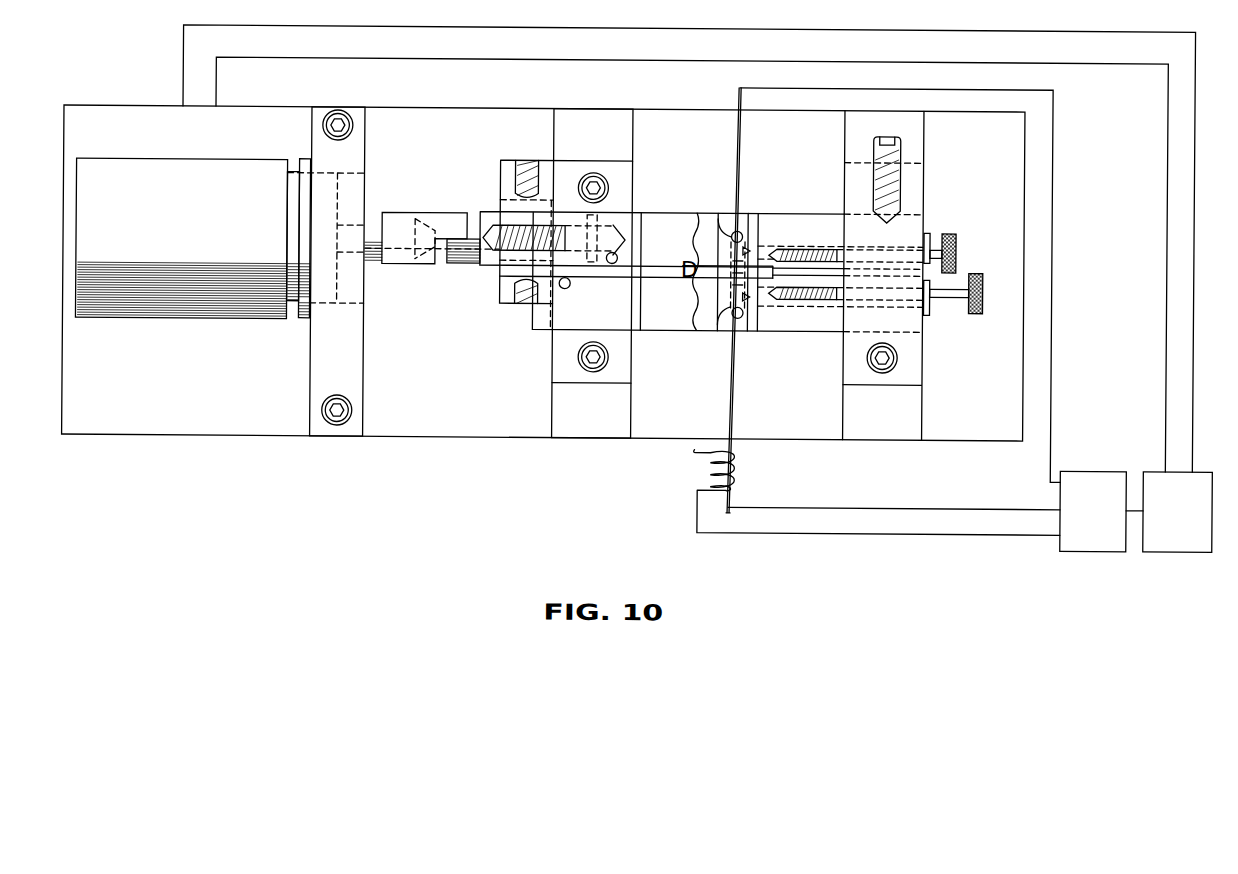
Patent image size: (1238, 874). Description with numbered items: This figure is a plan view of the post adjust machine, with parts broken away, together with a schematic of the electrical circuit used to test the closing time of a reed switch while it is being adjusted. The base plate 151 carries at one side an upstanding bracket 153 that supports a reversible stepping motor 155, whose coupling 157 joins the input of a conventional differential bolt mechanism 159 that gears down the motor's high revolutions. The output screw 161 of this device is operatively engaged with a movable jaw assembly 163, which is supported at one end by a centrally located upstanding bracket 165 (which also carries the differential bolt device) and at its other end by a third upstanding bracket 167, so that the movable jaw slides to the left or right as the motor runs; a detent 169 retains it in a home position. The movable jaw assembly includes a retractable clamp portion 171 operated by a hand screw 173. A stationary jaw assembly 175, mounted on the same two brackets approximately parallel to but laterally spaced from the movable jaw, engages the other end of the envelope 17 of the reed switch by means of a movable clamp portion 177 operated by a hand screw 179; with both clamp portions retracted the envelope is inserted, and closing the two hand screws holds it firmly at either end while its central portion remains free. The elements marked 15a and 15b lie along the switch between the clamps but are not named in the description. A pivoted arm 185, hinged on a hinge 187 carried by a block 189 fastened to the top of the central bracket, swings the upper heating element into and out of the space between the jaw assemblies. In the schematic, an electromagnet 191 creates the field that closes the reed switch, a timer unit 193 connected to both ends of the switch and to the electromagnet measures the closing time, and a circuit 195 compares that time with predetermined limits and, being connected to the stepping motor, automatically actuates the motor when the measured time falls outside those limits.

The test wire lower portion 15a is at (740, 357).
The test wire upper portion 15b is at (742, 153).
The envelope 17 is at (732, 237).
The base plate 151 is at (460, 432).
The upstanding bracket 153 is at (367, 378).
The reversible stepping motor 155 is at (134, 159).
The coupling 157 is at (422, 261).
The differential bolt mechanism 159 is at (501, 202).
The output screw 161 is at (603, 218).
The movable jaw assembly 163 is at (664, 208).
The centrally located upstanding bracket 165 is at (600, 380).
The third upstanding bracket 167 is at (900, 380).
The detent 169 is at (900, 171).
The retractable clamp portion 171 is at (768, 237).
The hand screw 173 is at (963, 238).
The stationary jaw assembly 175 is at (679, 332).
The movable clamp portion 177 is at (764, 295).
The hand screw 179 is at (985, 290).
The pivoted arm 185 is at (703, 326).
The hinge 187 is at (656, 264).
The block 189 is at (567, 314).
The electromagnet 191 is at (744, 465).
The timer unit 193 is at (1085, 464).
The circuit 195 is at (1147, 463).